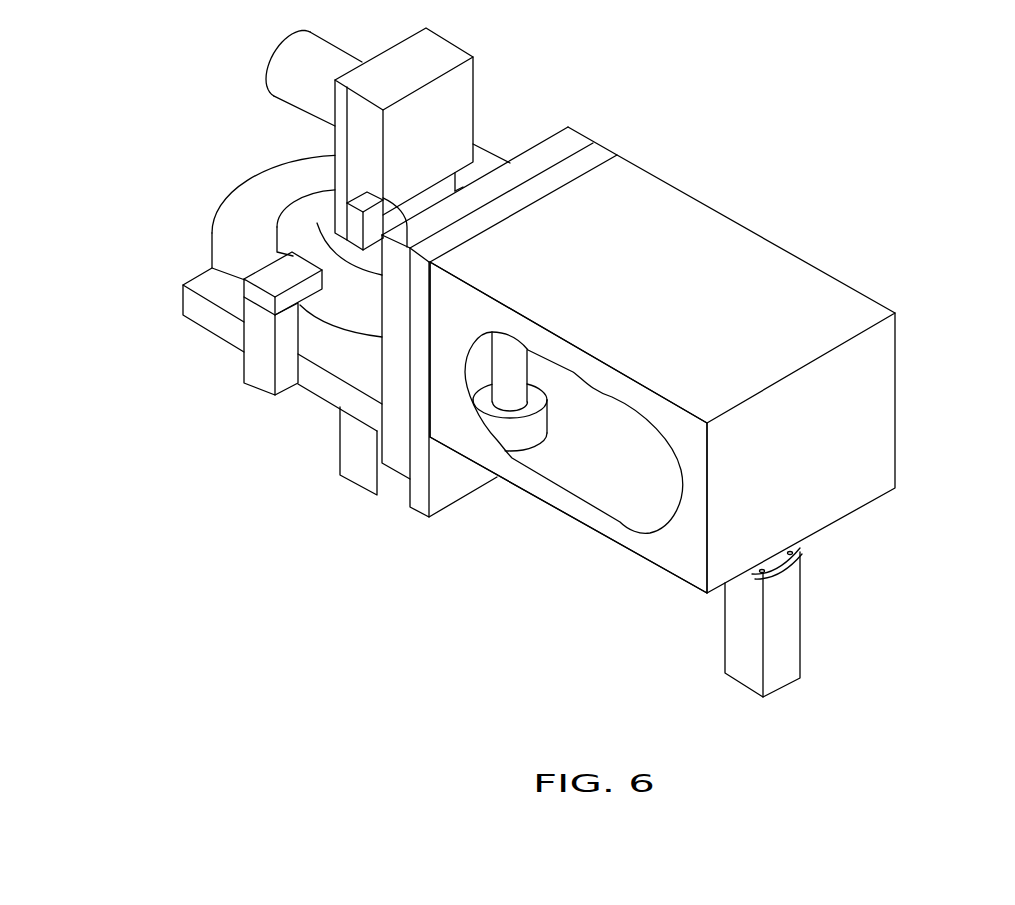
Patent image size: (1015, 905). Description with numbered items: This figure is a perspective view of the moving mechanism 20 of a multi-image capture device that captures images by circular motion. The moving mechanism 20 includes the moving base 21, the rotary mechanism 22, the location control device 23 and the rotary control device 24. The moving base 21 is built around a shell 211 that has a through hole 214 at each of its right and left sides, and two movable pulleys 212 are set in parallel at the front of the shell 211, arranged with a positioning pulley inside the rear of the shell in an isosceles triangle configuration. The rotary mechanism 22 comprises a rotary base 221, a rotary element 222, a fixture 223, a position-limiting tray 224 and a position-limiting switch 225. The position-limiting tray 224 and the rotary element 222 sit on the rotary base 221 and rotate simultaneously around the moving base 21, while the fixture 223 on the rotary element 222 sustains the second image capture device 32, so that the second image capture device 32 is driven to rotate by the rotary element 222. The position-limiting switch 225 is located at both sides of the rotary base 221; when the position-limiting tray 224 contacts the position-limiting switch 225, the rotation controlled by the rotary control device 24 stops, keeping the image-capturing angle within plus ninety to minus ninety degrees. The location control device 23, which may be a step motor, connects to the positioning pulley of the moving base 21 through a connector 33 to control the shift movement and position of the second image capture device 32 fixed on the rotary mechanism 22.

The moving mechanism 20 is at (840, 110).
The moving base 21 is at (900, 278).
The shell 211 is at (707, 300).
The movable pulleys 212 is at (527, 437).
The through hole 214 is at (638, 506).
The rotary mechanism 22 is at (167, 318).
The rotary base 221 is at (233, 297).
The rotary element 222 is at (356, 257).
The fixture 223 is at (355, 227).
The position-limiting tray 224 is at (298, 233).
The position-limiting switch 225 is at (263, 365).
The location control device 23 is at (778, 628).
The rotary control device 24 is at (365, 473).
The second image capture device 32 is at (440, 57).
The connector 33 is at (798, 563).